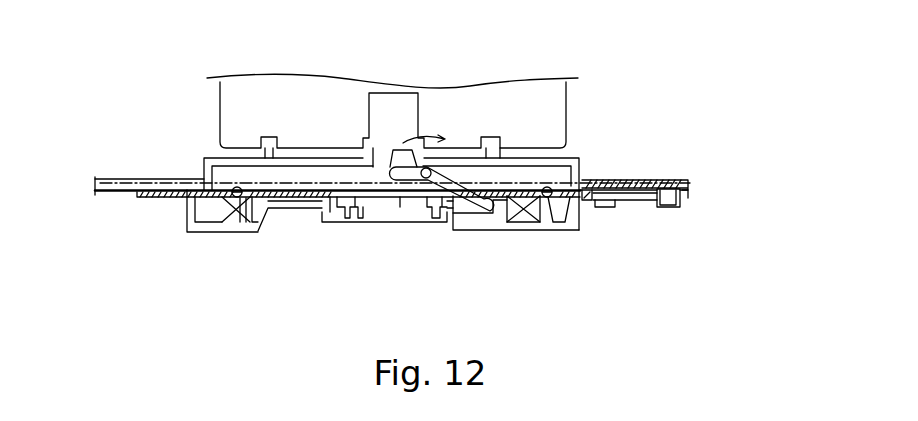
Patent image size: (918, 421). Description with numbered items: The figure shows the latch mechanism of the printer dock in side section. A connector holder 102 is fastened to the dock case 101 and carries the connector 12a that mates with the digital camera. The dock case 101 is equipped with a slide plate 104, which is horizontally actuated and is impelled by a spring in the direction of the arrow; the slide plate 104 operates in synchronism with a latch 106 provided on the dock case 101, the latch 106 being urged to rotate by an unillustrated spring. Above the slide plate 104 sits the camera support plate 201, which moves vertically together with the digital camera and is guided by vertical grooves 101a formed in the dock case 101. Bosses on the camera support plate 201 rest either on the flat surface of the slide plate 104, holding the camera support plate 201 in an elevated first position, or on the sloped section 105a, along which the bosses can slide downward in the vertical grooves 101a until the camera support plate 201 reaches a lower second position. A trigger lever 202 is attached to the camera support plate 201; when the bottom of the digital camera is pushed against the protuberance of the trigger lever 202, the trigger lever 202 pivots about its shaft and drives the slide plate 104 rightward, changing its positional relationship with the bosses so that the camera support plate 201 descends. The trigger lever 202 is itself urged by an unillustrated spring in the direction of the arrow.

The dock case 101 is at (112, 182).
The vertical groove 101a is at (235, 212).
The connector holder 102 is at (322, 222).
The slide plate 104 is at (189, 178).
The sloped section 105a is at (553, 212).
The latch 106 is at (693, 194).
The connector 12a is at (362, 148).
The camera support plate 201 is at (581, 161).
The trigger lever 202 is at (430, 170).